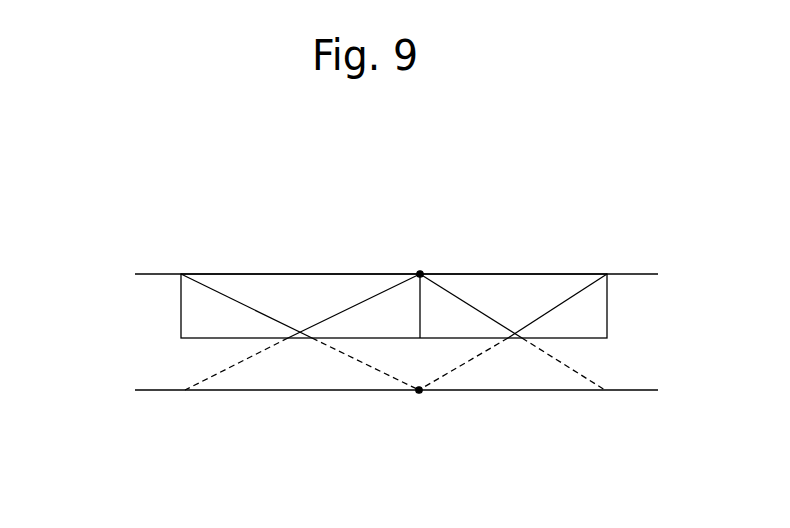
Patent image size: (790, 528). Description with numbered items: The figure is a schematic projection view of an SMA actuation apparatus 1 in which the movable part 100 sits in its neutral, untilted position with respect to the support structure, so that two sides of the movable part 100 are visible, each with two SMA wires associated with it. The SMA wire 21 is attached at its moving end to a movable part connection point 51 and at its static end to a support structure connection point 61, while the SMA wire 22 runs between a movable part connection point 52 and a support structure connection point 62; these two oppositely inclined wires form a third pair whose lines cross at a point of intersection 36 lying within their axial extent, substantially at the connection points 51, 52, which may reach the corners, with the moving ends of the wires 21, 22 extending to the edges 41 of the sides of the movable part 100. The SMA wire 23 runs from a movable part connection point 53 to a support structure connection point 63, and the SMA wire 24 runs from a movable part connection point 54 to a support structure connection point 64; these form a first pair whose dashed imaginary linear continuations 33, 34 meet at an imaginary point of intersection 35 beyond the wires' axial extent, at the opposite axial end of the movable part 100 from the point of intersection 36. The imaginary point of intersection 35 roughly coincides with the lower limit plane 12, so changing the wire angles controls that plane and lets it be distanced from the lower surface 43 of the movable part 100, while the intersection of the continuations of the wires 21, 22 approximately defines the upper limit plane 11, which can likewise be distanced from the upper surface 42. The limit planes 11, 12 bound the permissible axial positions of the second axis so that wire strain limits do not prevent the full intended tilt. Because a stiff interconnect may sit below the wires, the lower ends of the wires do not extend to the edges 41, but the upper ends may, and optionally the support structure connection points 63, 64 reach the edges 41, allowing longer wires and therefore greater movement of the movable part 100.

The actuation apparatus 1 is at (72, 182).
The upper limit plane 11 is at (650, 274).
The lower limit plane 12 is at (642, 390).
The movable part 100 is at (592, 297).
The SMA wire 21 is at (320, 322).
The SMA wire 22 is at (476, 305).
The SMA wire 23 is at (217, 292).
The SMA wire 24 is at (547, 307).
The imaginary linear continuation 33 is at (372, 368).
The imaginary linear continuation 34 is at (452, 373).
The imaginary point of intersection 35 is at (419, 392).
The point of intersection 36 is at (387, 221).
The edge 41 is at (181, 326).
The upper surface 42 is at (565, 274).
The lower surface 43 is at (573, 340).
The movable part connection point 51 is at (387, 221).
The movable part connection point 52 is at (420, 274).
The movable part connection point 53 is at (312, 340).
The movable part connection point 54 is at (504, 340).
The support structure connection point 61 is at (288, 340).
The support structure connection point 62 is at (522, 340).
The support structure connection point 63 is at (181, 274).
The support structure connection point 64 is at (607, 274).